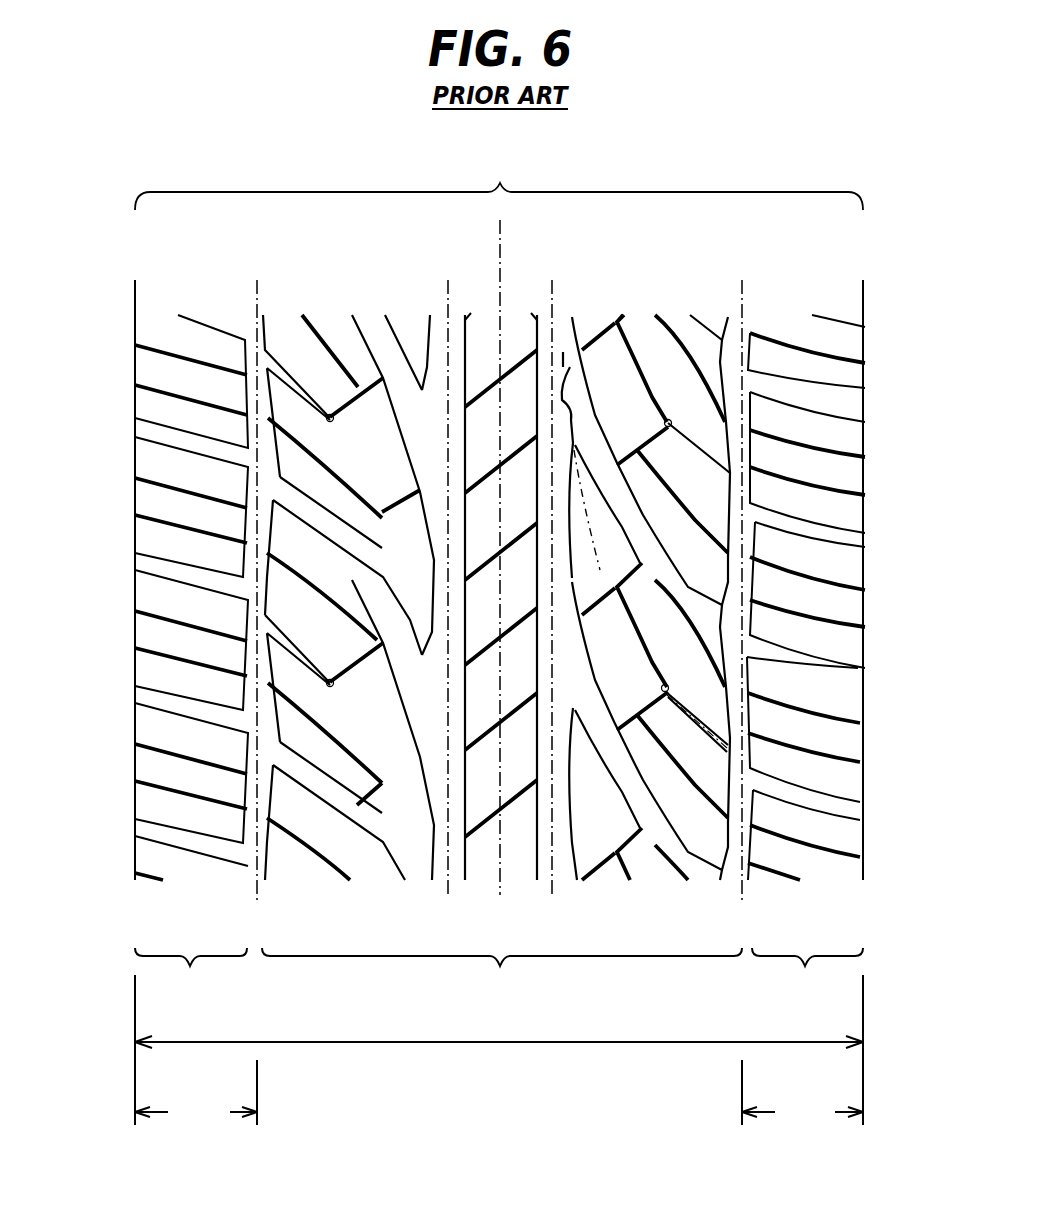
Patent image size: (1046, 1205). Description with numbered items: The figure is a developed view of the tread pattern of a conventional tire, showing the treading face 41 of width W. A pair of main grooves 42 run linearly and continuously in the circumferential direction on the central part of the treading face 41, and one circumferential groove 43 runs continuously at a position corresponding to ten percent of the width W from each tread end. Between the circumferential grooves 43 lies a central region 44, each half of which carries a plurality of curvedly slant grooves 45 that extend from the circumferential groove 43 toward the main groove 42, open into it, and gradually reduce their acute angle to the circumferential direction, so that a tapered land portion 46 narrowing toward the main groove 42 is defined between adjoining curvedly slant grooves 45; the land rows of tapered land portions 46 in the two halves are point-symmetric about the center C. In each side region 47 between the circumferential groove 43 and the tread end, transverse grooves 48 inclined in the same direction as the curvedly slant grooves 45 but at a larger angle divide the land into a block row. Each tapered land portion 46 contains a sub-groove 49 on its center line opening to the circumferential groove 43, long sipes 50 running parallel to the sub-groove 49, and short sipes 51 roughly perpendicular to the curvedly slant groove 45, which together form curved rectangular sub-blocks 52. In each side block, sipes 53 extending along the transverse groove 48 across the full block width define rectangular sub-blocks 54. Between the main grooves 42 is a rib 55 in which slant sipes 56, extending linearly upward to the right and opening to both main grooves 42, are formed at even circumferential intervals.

The treading face 41 is at (499, 514).
The main groove 42 is at (442, 880).
The circumferential groove 43 is at (255, 885).
The central region 44 is at (502, 973).
The curvedly slant groove 45 is at (403, 592).
The tapered land portion 46 is at (339, 434).
The side region 47 is at (499, 973).
The transverse groove 48 is at (200, 567).
The sub-groove 49 is at (302, 392).
The long sipe 50 is at (288, 428).
The short sipe 51 is at (405, 493).
The sub-block 52 is at (392, 432).
The sipe 53 is at (187, 393).
The sub-block 54 is at (232, 486).
The rib 55 is at (518, 330).
The slant sipe 56 is at (483, 482).
The center of the treading face C is at (500, 282).
The width of the treading face W is at (499, 1050).